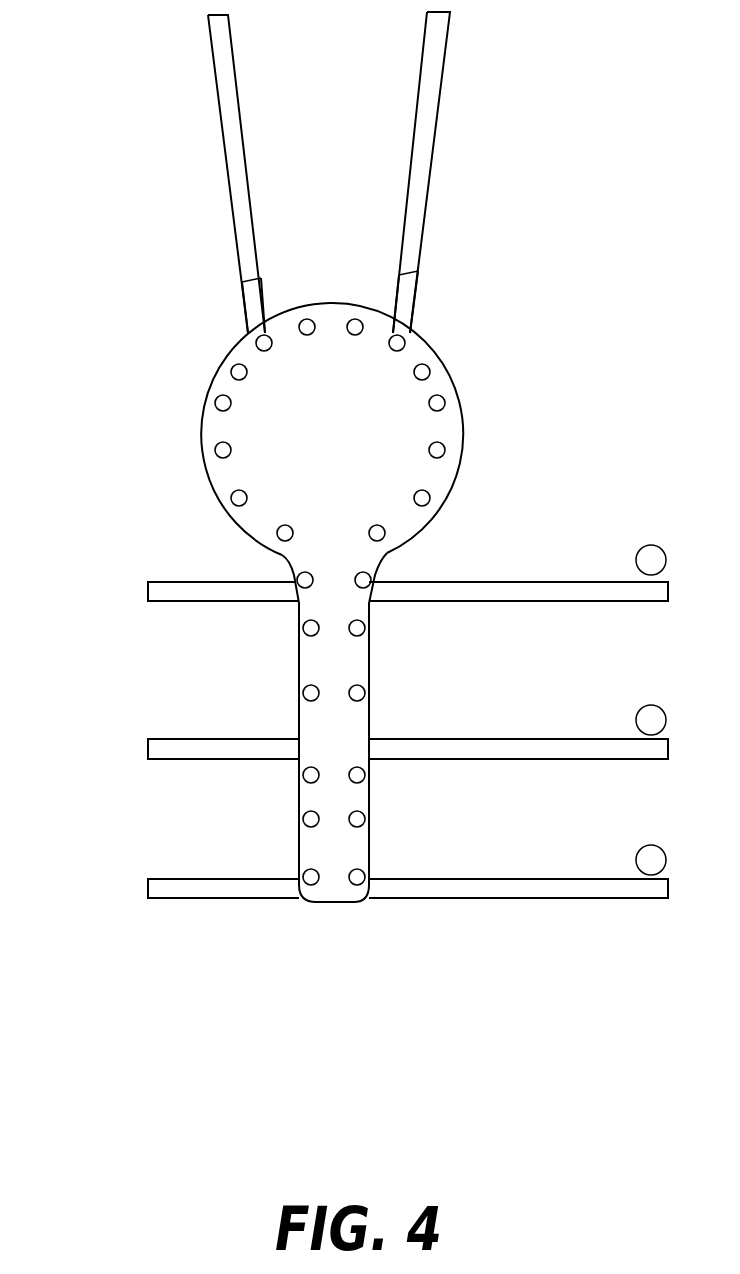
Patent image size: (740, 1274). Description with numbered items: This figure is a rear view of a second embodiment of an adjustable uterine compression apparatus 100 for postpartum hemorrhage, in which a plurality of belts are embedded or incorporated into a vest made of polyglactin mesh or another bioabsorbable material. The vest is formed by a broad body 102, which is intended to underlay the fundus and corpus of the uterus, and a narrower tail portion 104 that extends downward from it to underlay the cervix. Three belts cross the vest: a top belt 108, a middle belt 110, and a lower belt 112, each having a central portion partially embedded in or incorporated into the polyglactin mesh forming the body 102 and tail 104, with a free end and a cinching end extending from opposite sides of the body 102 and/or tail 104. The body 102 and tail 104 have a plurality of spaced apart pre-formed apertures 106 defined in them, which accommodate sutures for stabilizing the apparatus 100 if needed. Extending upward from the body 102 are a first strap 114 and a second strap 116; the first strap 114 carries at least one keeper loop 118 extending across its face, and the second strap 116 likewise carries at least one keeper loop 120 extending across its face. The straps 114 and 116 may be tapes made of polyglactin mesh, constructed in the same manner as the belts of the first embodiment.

The adjustable uterine compression apparatus 100 is at (643, 303).
The body 102 is at (393, 438).
The tail portion 104 is at (332, 720).
The pre-formed apertures 106 is at (429, 494).
The top belt 108 is at (180, 582).
The middle belt 110 is at (180, 739).
The lower belt 112 is at (180, 879).
The first strap 114 is at (225, 143).
The second strap 116 is at (438, 96).
The keeper loop 118 is at (245, 280).
The keeper loop 120 is at (412, 272).